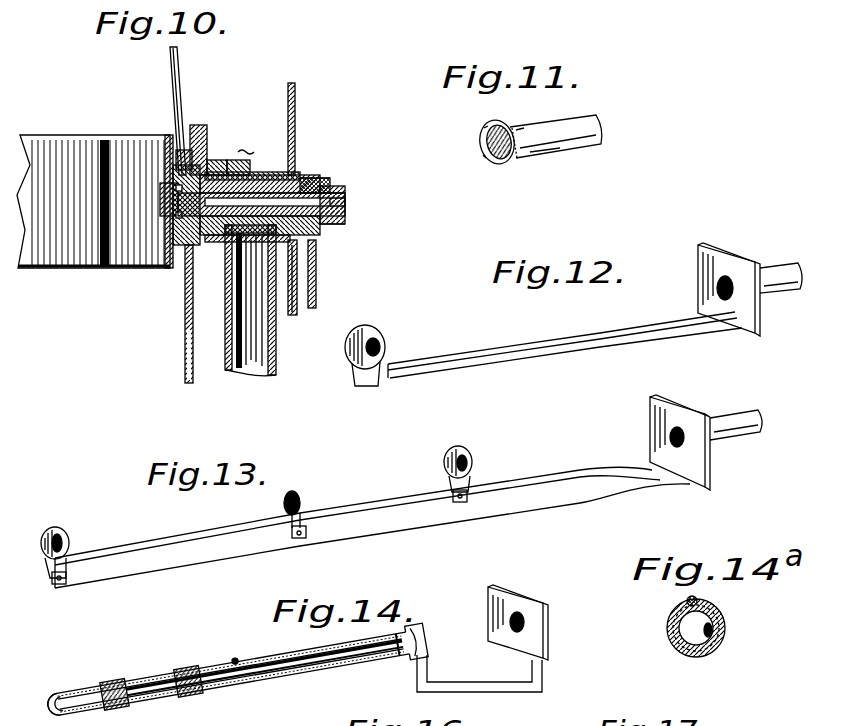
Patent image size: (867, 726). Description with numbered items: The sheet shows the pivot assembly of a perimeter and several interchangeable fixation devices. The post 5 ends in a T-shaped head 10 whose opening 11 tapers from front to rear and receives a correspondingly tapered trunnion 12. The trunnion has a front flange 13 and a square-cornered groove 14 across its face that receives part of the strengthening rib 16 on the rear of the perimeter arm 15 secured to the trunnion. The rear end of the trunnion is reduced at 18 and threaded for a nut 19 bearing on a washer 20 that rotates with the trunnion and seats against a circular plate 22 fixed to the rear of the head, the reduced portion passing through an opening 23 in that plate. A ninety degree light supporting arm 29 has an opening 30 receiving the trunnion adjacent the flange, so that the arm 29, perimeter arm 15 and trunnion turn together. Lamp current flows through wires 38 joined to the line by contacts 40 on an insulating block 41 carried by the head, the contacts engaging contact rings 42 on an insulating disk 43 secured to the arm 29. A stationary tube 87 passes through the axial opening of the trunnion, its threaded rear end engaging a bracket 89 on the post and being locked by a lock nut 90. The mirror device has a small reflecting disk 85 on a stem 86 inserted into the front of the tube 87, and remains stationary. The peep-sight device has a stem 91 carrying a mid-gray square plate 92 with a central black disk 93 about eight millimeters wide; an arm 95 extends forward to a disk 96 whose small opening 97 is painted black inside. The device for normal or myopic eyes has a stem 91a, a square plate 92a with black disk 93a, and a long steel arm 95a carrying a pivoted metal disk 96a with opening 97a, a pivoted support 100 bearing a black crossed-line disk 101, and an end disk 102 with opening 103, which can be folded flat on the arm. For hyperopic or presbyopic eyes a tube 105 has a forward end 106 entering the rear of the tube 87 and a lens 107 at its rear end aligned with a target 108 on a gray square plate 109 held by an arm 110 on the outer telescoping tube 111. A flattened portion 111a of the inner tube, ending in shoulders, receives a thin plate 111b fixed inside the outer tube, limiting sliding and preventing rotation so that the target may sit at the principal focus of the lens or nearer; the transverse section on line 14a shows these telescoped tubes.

In FIG. 10, the post or standard 5 is at (278, 372).
In FIG. 10, the T-shaped head 10 is at (278, 176).
In FIG. 10, the opening 11 is at (268, 176).
In FIG. 10, the trunnion 12 is at (258, 176).
In FIG. 10, the flange 13 is at (176, 252).
In FIG. 10, the square cornered groove 14 is at (168, 235).
In FIG. 10, the perimeter arm 15 is at (168, 225).
In FIG. 10, the rib or thickened strengthening portion 16 is at (168, 215).
In FIG. 10, the reduced portion 18 is at (311, 185).
In FIG. 10, the nut 19 is at (316, 191).
In FIG. 10, the washer 20 is at (306, 180).
In FIG. 10, the circular plate 22 is at (296, 102).
In FIG. 10, the opening 23 is at (301, 178).
In FIG. 10, the light supporting arm 29 is at (182, 84).
In FIG. 10, the opening 30 is at (187, 246).
In FIG. 10, the wires 38 is at (196, 128).
In FIG. 10, the contacts 40 is at (218, 160).
In FIG. 10, the insulating block 41 is at (243, 158).
In FIG. 10, the contact rings 42 is at (210, 160).
In FIG. 10, the disk of insulating material 43 is at (180, 150).
In FIG. 10, the reflecting disk 85 is at (160, 192).
In FIG. 11, the reflecting disk 85 is at (490, 152).
In FIG. 10, the stem 86 is at (165, 208).
In FIG. 11, the stem 86 is at (566, 156).
In FIG. 10, the stationary tube 87 is at (345, 208).
In FIG. 10, the bracket 89 is at (316, 262).
In FIG. 10, the lock nut 90 is at (331, 217).
In FIG. 12, the stem 91 is at (772, 268).
In FIG. 12, the square plate 92 is at (716, 246).
In FIG. 12, the black circular disk 93 is at (716, 288).
In FIG. 12, the arm 95 is at (559, 356).
In FIG. 12, the circular disk 96 is at (385, 341).
In FIG. 12, the loop 97 is at (372, 341).
In FIG. 13, the stem 91a is at (740, 436).
In FIG. 13, the square plate 92a is at (708, 476).
In FIG. 13, the black colored disk 93a is at (672, 437).
In FIG. 13, the steel arm 95a is at (421, 523).
In FIG. 13, the circular metal disk 96a is at (475, 470).
In FIG. 13, the opening 97a is at (463, 466).
In FIG. 13, the support 100 is at (308, 514).
In FIG. 13, the black circular disk 101 is at (284, 502).
In FIG. 13, the circular disk 102 is at (51, 530).
In FIG. 13, the opening 103 is at (64, 543).
In FIG. 14, the section line 14a is at (243, 638).
In FIG. 14, the tube 105 is at (130, 686).
In FIG. 14A, the tube 105 is at (716, 646).
In FIG. 14, the forward end 106 is at (74, 696).
In FIG. 14, the lens 107 is at (402, 670).
In FIG. 14, the target or fixation object 108 is at (506, 614).
In FIG. 14, the square plate 109 is at (546, 594).
In FIG. 14, the arm 110 is at (522, 701).
In FIG. 14, the tube 111 is at (313, 694).
In FIG. 14A, the tube 111 is at (679, 650).
In FIG. 14, the flattened portion 111a is at (213, 668).
In FIG. 14A, the flattened portion 111a is at (719, 624).
In FIG. 14, the thin flat plate or disk 111b is at (262, 650).
In FIG. 14A, the thin flat plate or disk 111b is at (700, 605).